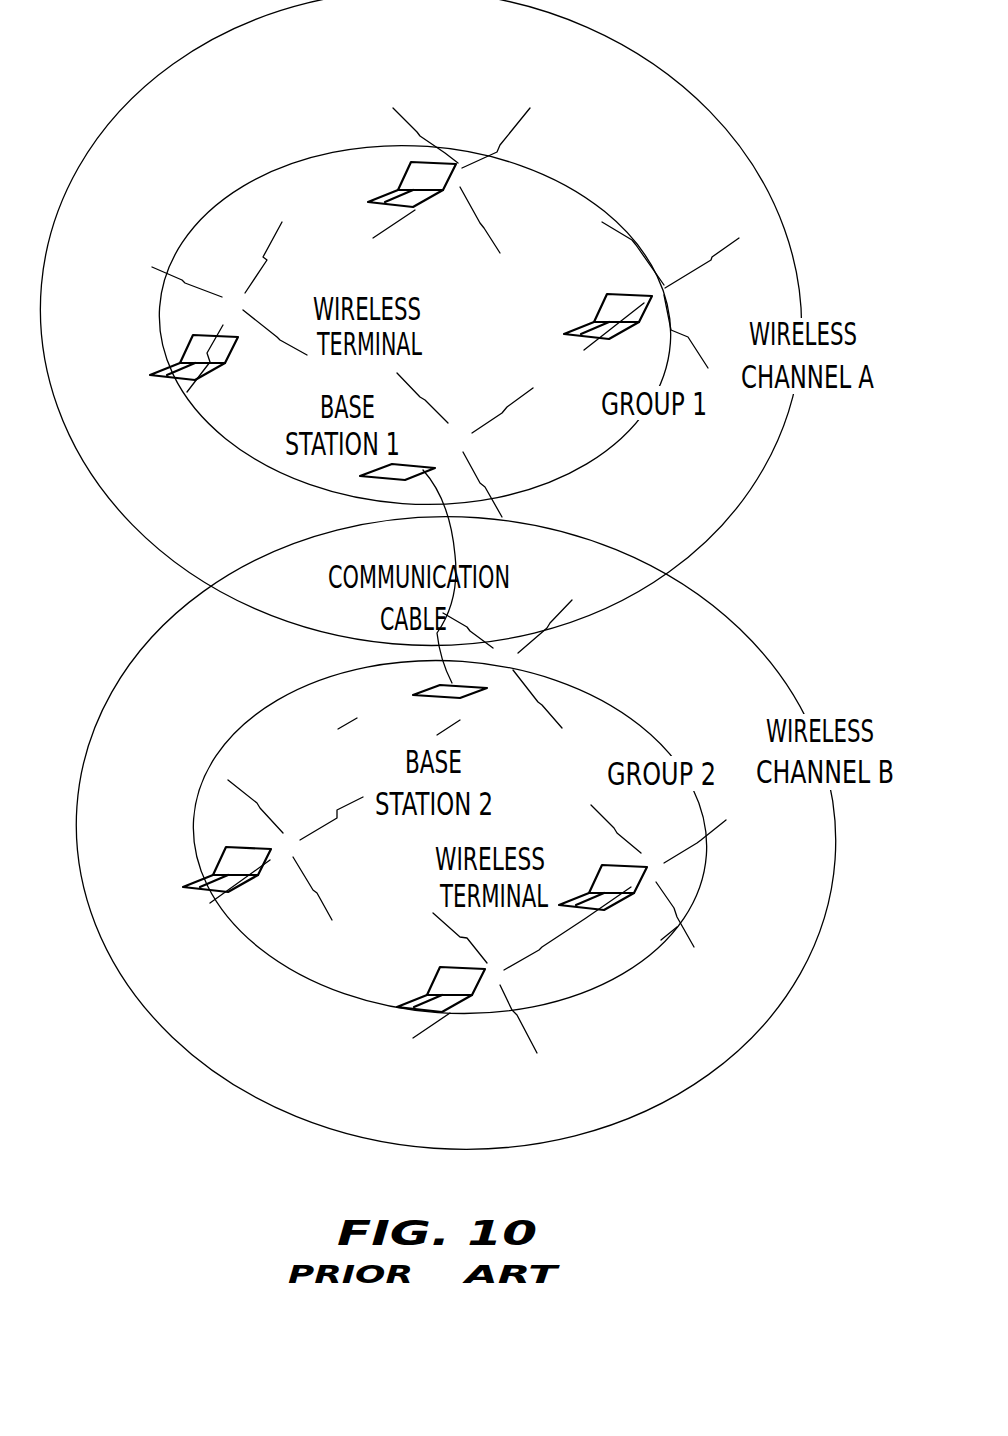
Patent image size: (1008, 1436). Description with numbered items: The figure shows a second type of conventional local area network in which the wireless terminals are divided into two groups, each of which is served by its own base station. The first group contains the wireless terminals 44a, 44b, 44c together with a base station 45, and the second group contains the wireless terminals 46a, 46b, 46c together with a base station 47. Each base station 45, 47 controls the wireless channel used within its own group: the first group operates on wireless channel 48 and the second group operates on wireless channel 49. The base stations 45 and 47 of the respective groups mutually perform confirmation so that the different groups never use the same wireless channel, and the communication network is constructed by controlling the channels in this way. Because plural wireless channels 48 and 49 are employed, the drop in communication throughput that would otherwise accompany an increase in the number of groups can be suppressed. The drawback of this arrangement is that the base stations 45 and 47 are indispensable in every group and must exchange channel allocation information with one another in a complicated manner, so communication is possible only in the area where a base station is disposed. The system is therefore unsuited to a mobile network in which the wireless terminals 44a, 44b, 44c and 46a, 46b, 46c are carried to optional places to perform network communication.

The wireless terminal 44a is at (238, 344).
The wireless terminal 44b is at (596, 313).
The wireless terminal 44c is at (423, 213).
The base station 45 is at (362, 484).
The wireless terminal 46a is at (270, 862).
The wireless terminal 46b is at (433, 987).
The wireless terminal 46c is at (601, 867).
The base station 47 is at (414, 697).
The wireless channel 48 is at (752, 166).
The wireless channel 49 is at (736, 625).